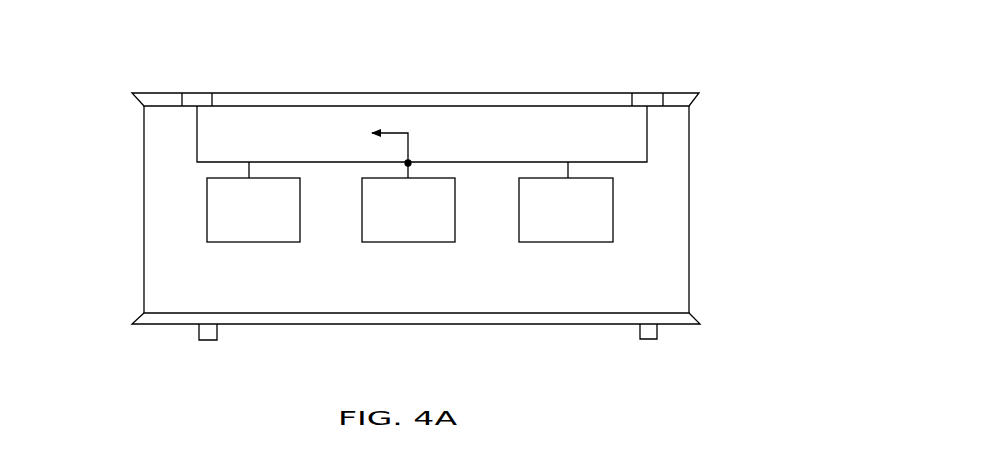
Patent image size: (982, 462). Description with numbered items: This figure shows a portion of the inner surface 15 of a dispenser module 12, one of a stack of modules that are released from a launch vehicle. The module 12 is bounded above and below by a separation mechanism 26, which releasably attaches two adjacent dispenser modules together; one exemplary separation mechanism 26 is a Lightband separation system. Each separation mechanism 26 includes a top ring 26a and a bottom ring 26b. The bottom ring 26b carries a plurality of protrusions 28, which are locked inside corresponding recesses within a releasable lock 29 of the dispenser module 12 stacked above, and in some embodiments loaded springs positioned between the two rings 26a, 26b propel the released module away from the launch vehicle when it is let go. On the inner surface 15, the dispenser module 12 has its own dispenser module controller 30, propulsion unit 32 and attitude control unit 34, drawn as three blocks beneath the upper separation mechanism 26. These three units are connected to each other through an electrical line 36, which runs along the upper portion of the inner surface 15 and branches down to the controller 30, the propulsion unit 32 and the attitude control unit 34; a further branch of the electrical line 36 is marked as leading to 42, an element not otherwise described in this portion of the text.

The dispenser module 12 is at (104, 232).
The inner surface 15 is at (172, 125).
The separation mechanism 26 is at (446, 211).
The top ring 26a is at (696, 100).
The bottom ring 26b is at (688, 318).
The protrusions 28 is at (198, 332).
The releasable lock 29 is at (199, 91).
The dispenser module controller 30 is at (419, 244).
The propulsion unit 32 is at (553, 244).
The attitude control unit 34 is at (250, 244).
The electrical line 36 is at (478, 160).
The external component (to 42) 42 is at (363, 142).